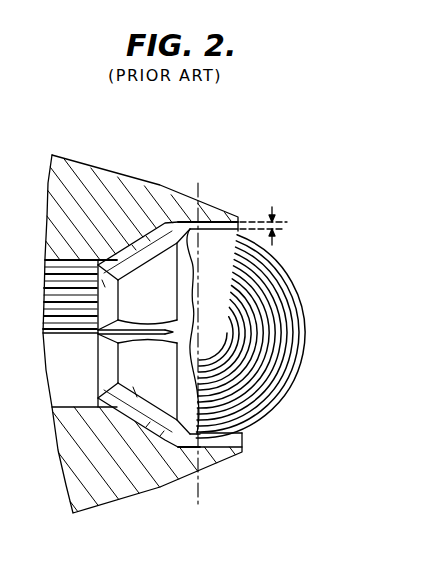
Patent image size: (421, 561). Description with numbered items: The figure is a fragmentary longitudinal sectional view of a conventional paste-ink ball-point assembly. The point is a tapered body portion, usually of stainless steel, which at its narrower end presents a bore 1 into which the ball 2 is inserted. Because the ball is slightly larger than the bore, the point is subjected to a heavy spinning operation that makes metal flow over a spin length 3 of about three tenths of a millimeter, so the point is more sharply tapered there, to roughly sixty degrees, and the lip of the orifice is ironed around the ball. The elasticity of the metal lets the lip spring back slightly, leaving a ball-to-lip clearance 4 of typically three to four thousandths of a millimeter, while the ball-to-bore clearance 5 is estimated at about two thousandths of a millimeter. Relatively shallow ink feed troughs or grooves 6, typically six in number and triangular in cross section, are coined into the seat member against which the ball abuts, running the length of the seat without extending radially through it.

The bore 1 is at (160, 218).
The ball 2 is at (280, 292).
The spin length 3 is at (198, 183).
The ball-to-lip clearance 4 is at (282, 227).
The ball-to-bore clearance 5 is at (163, 432).
The ink feed troughs or grooves 6 is at (102, 343).